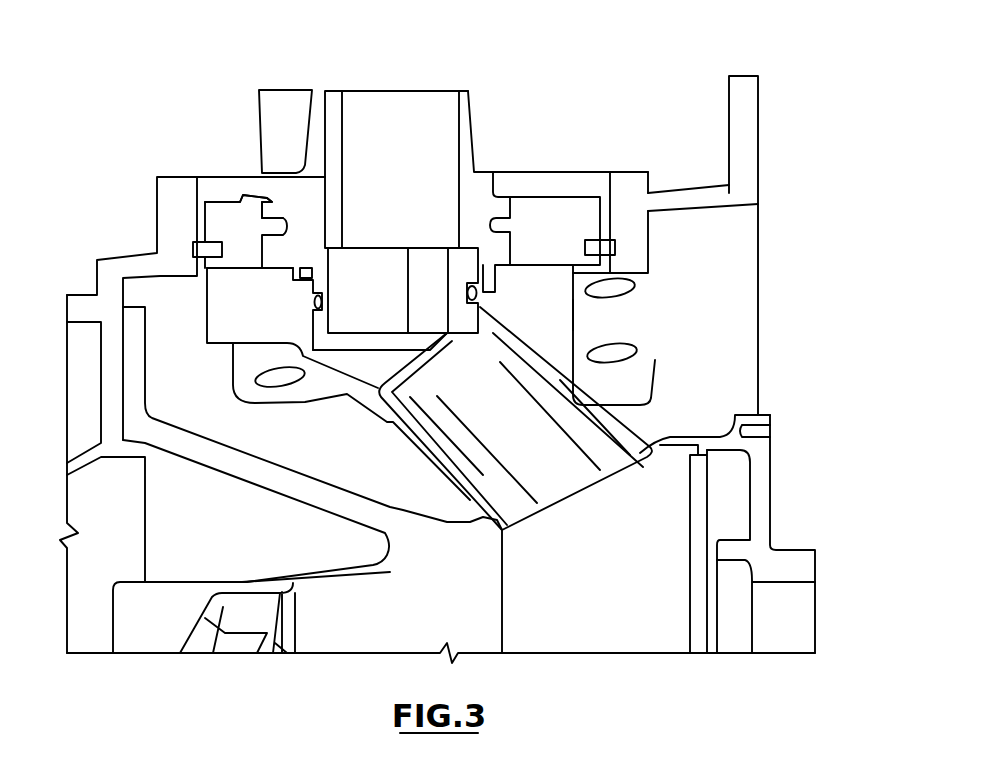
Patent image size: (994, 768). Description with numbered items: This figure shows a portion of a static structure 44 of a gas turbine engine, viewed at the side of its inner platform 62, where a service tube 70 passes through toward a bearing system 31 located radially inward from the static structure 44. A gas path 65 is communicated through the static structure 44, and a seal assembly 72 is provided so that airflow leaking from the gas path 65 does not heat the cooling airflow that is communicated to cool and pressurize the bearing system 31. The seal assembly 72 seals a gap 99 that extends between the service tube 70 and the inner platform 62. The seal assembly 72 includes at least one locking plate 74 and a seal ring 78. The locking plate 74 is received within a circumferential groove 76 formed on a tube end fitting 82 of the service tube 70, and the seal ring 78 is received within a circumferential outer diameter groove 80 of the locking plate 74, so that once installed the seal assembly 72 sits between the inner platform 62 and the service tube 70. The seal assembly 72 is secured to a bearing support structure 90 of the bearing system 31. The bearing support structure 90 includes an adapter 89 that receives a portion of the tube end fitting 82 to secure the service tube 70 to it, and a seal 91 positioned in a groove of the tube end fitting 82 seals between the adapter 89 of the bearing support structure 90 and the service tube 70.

The bearing system 31 is at (660, 405).
The static structure 44 is at (660, 64).
The inner platform 62 is at (632, 182).
The gas path 65 is at (166, 72).
The service tube 70 is at (430, 132).
The seal assembly 72 is at (258, 190).
The locking plate 74 is at (519, 222).
The groove 76 is at (282, 200).
The seal ring 78 is at (198, 250).
The outer diameter groove 80 is at (213, 230).
The tube end fitting 82 is at (467, 193).
The adapter 89 is at (233, 318).
The bearing support structure 90 is at (472, 422).
The seal 91 is at (480, 290).
The gap 99 is at (579, 160).